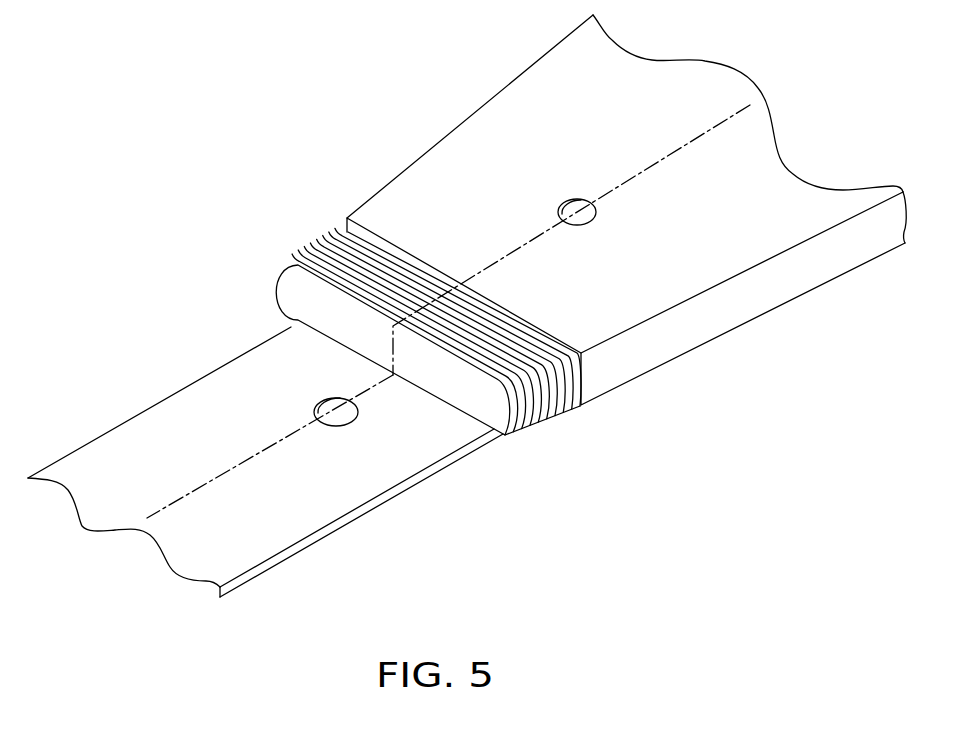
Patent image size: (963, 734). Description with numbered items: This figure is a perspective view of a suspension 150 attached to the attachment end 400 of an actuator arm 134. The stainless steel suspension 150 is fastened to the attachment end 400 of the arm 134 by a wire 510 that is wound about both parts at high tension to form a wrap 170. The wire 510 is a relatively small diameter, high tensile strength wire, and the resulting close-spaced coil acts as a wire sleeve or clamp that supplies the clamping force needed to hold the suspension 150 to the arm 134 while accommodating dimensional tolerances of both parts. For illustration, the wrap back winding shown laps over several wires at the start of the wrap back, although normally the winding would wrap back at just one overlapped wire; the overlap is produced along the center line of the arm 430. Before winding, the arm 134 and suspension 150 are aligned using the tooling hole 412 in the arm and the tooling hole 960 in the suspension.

The actuator arm 134 is at (412, 192).
The suspension 150 is at (350, 497).
The wrap 170 is at (316, 262).
The attachment end 400 is at (297, 302).
The tooling hole 412 is at (571, 200).
The center line of the arm 430 is at (677, 148).
The wire 510 is at (550, 407).
The tooling hole 960 is at (316, 416).